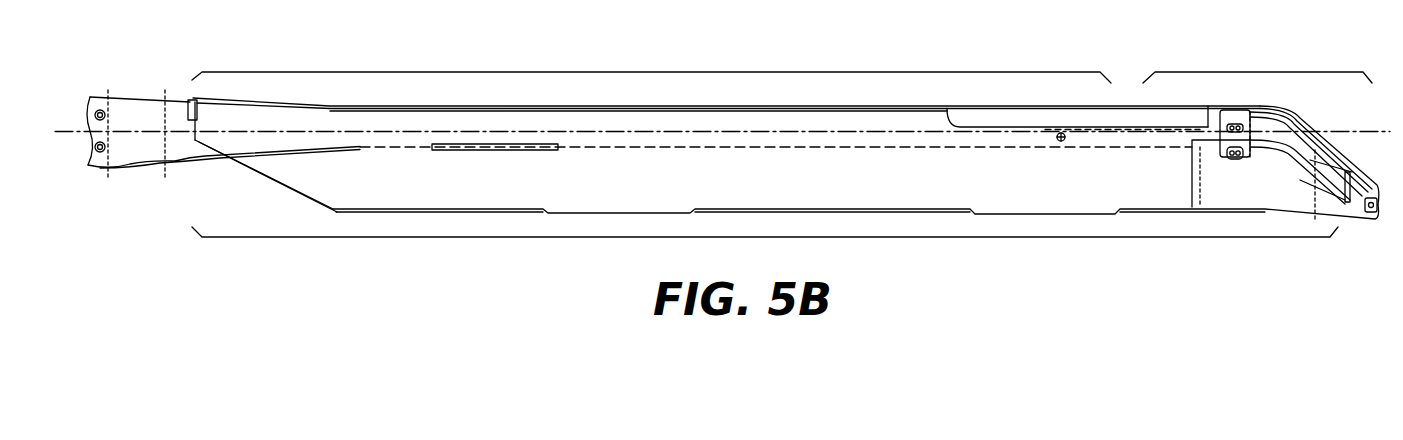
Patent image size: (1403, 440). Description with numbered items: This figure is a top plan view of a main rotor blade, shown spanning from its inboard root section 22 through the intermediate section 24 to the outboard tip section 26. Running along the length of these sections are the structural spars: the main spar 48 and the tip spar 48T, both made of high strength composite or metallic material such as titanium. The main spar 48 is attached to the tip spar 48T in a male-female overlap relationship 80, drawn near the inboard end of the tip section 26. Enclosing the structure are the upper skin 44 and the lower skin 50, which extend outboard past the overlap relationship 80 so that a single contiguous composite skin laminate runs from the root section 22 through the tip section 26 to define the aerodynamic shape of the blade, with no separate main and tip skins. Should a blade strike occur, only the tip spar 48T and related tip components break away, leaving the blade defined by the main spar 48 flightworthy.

The root section 22 is at (216, 52).
The intermediate section 24 is at (582, 72).
The tip section 26 is at (1222, 72).
The main spar 48 is at (885, 132).
The tip spar 48T is at (1297, 148).
The male-female overlap relationship 80 is at (1212, 127).
The upper skin 44 is at (943, 237).
The lower skin 50 is at (765, 259).